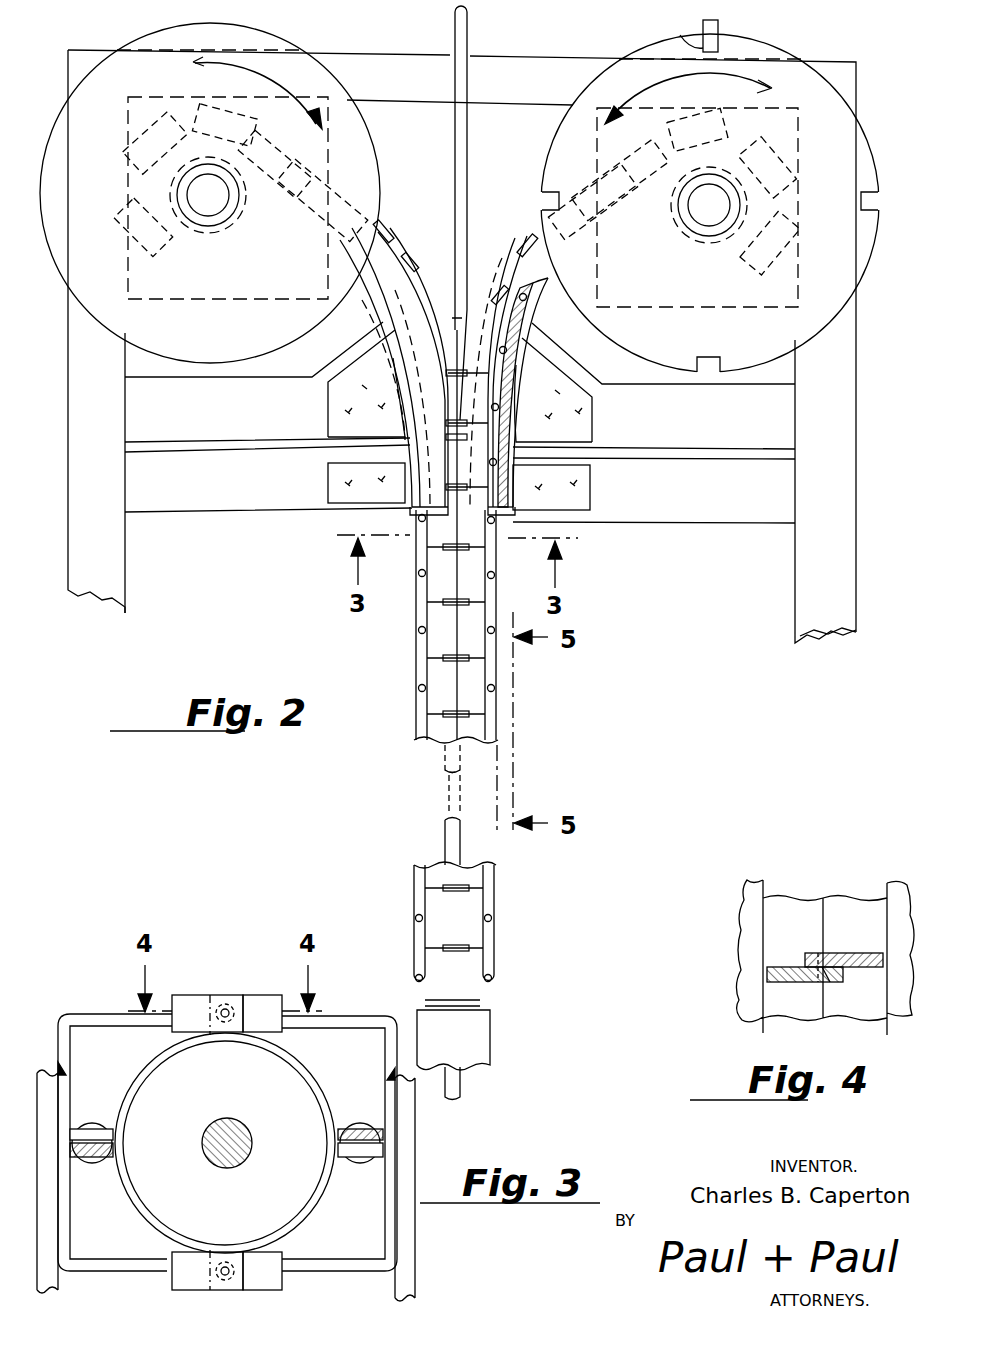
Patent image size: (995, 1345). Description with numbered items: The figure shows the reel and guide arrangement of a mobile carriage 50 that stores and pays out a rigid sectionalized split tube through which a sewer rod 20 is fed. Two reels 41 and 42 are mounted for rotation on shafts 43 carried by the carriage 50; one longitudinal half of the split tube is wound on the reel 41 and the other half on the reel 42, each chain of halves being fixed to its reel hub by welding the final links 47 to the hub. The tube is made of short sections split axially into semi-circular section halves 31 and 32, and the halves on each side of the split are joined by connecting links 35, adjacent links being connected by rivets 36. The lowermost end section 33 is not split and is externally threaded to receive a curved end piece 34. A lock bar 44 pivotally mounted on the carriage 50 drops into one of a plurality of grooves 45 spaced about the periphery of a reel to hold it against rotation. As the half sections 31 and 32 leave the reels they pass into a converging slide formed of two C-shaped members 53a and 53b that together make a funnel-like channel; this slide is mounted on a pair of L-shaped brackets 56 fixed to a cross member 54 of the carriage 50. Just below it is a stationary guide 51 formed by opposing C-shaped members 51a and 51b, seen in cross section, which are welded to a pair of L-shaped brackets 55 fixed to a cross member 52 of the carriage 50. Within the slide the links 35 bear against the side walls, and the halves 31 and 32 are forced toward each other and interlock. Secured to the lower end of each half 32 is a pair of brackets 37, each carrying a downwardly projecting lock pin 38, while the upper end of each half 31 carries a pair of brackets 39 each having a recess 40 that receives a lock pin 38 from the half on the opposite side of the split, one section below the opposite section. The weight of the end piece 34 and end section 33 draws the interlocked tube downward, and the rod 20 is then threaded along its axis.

In FIG. 2, the sewer rod 20 is at (468, 32).
In FIG. 3, the sewer rod 20 is at (232, 1125).
In FIG. 2, the semi-circular section half 31 is at (405, 262).
In FIG. 3, the semi-circular section half 31 is at (145, 1068).
In FIG. 2, the semi-circular section half 32 is at (505, 262).
In FIG. 3, the semi-circular section half 32 is at (320, 1096).
In FIG. 2, the end section 33 is at (460, 987).
In FIG. 2, the curved end piece 34 is at (475, 1047).
In FIG. 2, the connecting links 35 is at (422, 672).
In FIG. 3, the connecting links 35 is at (106, 1158).
In FIG. 2, the rivets 36 is at (494, 573).
In FIG. 3, the brackets 37 is at (267, 1002).
In FIG. 4, the brackets 37 is at (858, 955).
In FIG. 3, the lock pin 38 is at (226, 1008).
In FIG. 4, the lock pin 38 is at (826, 967).
In FIG. 3, the brackets 39 is at (190, 1000).
In FIG. 4, the brackets 39 is at (788, 968).
In FIG. 4, the recess 40 is at (838, 980).
In FIG. 2, the reel 41 is at (257, 46).
In FIG. 2, the reel 42 is at (765, 52).
In FIG. 2, the shafts 43 is at (216, 205).
In FIG. 2, the lock bar 44 is at (718, 30).
In FIG. 2, the grooves 45 is at (690, 42).
In FIG. 2, the final links 47 is at (185, 235).
In FIG. 2, the carriage 50 is at (840, 420).
In FIG. 4, the stationary guide 51 is at (752, 918).
In FIG. 2, the C-shaped member 51a is at (423, 522).
In FIG. 3, the C-shaped member 51a is at (90, 1018).
In FIG. 2, the C-shaped member 51b is at (520, 515).
In FIG. 3, the C-shaped member 51b is at (360, 1020).
In FIG. 2, the cross member 52 is at (150, 483).
In FIG. 2, the C-shaped member 53a is at (383, 296).
In FIG. 2, the C-shaped member 53b is at (545, 310).
In FIG. 2, the cross member 54 is at (160, 403).
In FIG. 2, the L-shaped brackets 55 is at (345, 495).
In FIG. 3, the L-shaped brackets 55 is at (47, 1072).
In FIG. 2, the L-shaped brackets 56 is at (372, 380).